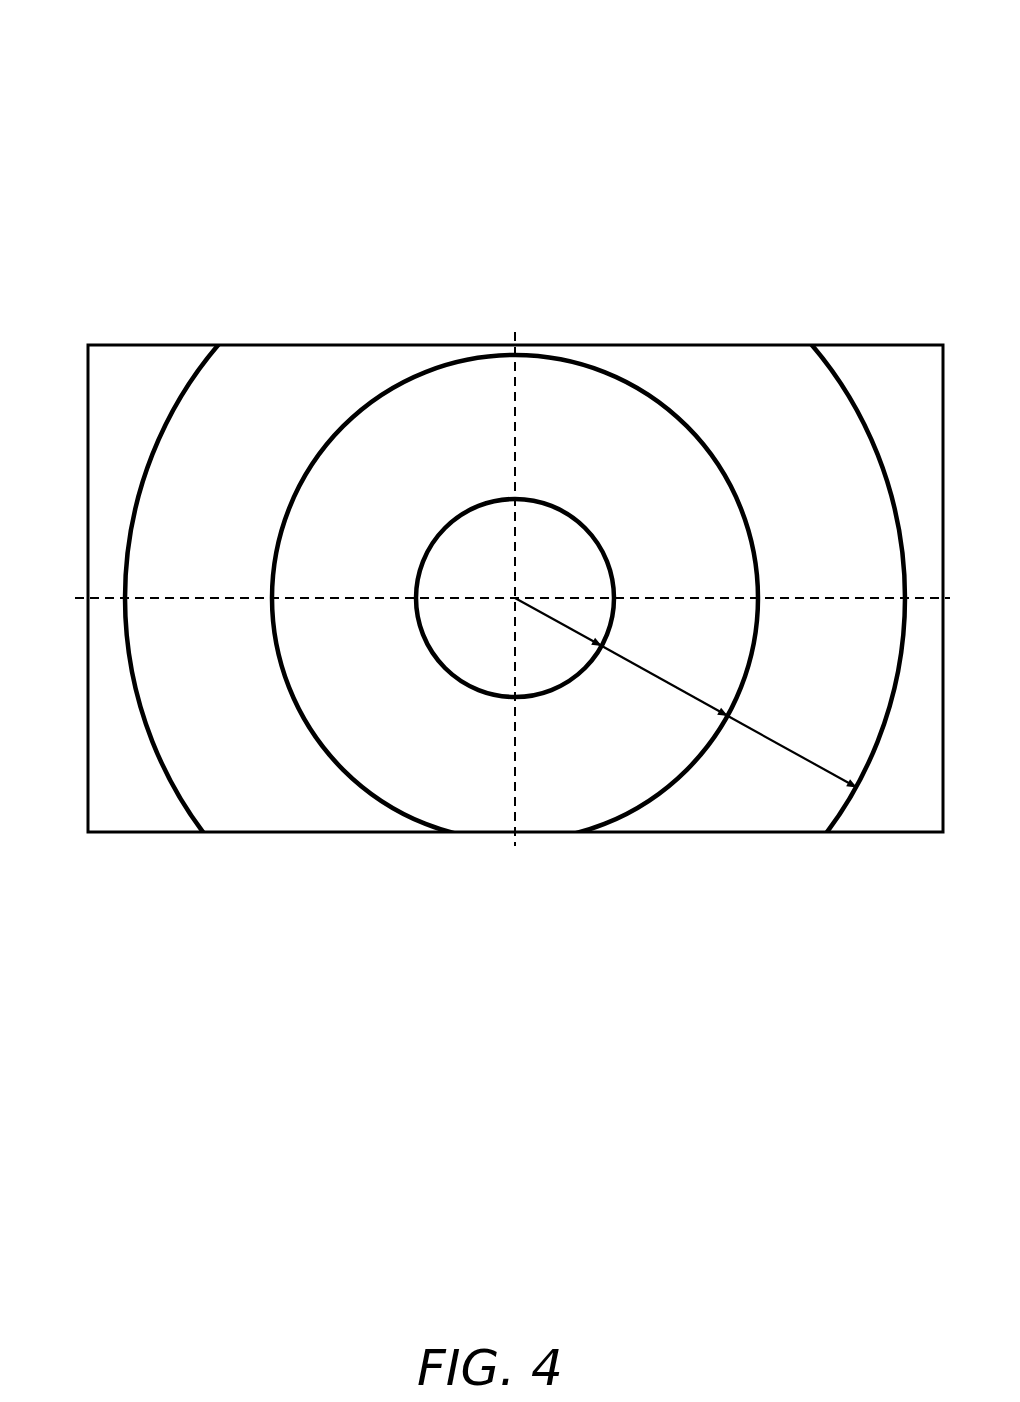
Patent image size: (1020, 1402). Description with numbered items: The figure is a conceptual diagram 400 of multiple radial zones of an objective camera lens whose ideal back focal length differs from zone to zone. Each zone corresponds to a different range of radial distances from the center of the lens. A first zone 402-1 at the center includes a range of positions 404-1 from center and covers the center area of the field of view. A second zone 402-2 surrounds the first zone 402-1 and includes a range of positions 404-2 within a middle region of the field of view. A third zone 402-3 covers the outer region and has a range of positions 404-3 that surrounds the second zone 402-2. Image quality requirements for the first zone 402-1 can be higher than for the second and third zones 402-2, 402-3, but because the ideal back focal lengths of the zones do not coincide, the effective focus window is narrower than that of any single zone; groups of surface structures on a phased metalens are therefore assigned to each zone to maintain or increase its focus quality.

The conceptual diagram 400 is at (144, 50).
The first zone 402-1 is at (472, 547).
The second zone 402-2 is at (322, 492).
The third zone 402-3 is at (208, 405).
The range of positions 404-1 is at (565, 630).
The range of positions 404-2 is at (703, 698).
The range of positions 404-3 is at (820, 765).